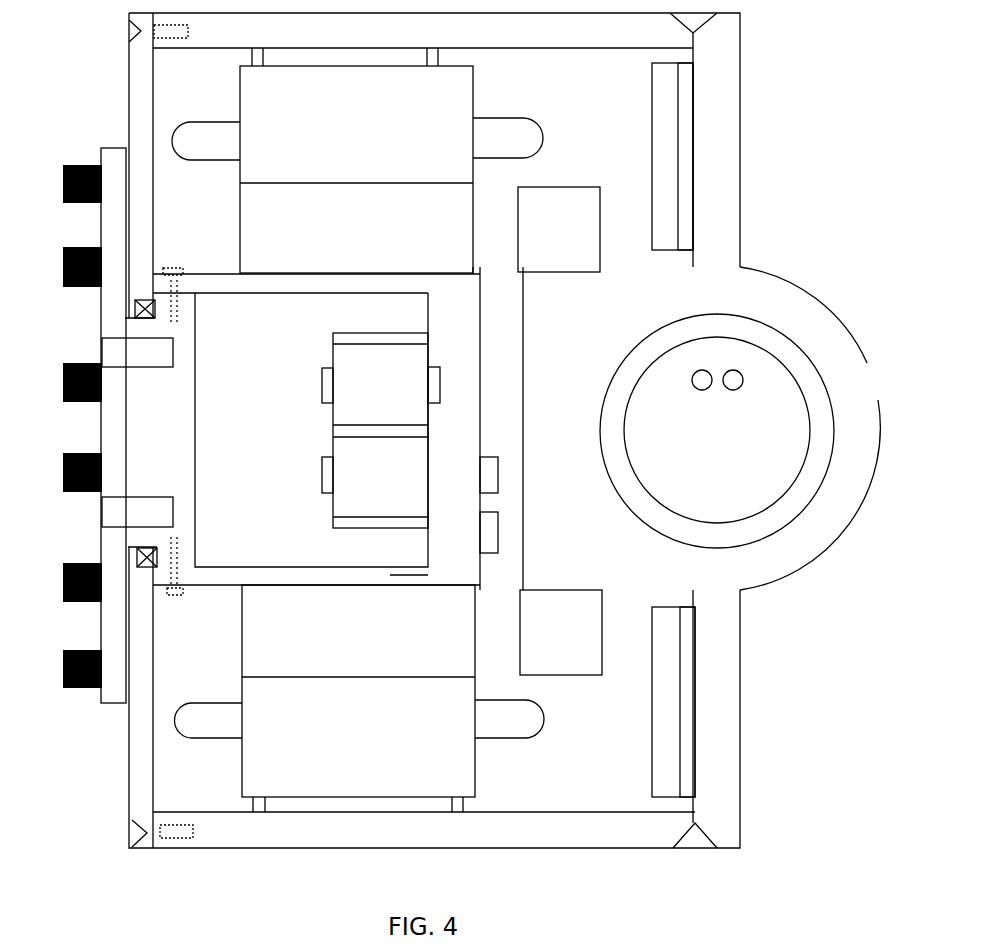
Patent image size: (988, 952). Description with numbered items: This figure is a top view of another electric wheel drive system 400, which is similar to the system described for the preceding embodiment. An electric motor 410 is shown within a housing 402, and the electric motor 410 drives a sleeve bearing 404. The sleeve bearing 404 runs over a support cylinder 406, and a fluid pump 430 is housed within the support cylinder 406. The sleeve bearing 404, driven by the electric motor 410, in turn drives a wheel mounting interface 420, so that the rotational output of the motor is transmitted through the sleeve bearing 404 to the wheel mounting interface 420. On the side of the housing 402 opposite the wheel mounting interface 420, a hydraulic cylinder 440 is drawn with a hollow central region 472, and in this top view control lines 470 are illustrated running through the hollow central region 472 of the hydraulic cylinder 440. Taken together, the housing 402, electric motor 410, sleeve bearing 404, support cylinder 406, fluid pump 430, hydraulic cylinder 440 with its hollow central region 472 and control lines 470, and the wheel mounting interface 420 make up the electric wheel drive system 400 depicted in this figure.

The electric wheel drive system 400 is at (455, 479).
The housing 402 is at (517, 840).
The sleeve bearing 404 is at (262, 288).
The support cylinder 406 is at (293, 545).
The electric motor 410 is at (270, 205).
The wheel mounting interface 420 is at (118, 625).
The fluid pump 430 is at (387, 488).
The hydraulic cylinder 440 is at (798, 347).
The control lines 470 is at (712, 380).
The hollow central region 472 is at (758, 432).